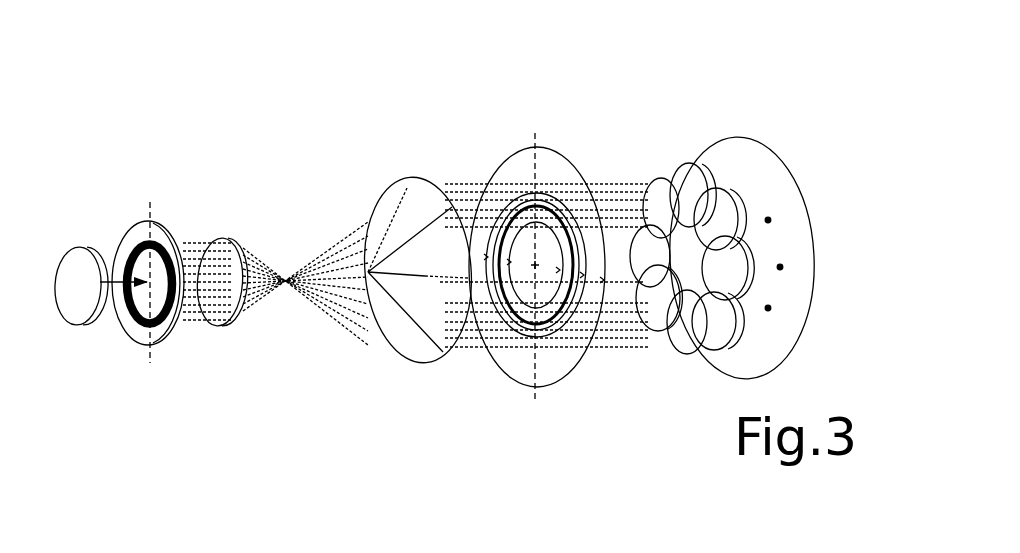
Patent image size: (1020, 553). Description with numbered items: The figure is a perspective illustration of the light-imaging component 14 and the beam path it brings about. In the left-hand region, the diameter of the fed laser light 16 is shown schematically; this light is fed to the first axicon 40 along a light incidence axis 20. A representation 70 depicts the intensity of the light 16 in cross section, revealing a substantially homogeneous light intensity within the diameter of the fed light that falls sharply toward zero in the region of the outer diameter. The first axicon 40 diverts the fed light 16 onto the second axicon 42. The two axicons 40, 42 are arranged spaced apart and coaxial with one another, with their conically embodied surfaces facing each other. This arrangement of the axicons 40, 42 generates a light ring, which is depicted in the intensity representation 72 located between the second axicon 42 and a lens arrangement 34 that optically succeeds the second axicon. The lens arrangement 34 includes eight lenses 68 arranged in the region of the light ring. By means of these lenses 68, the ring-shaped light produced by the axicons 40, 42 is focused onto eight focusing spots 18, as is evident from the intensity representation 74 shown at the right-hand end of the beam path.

The light-imaging component 14 is at (485, 107).
The laser light 16 is at (90, 328).
The focusing spots 18 is at (770, 308).
The light incidence axis 20 is at (113, 262).
The lens arrangement 34 is at (661, 107).
The first axicon 40 is at (222, 237).
The second axicon 42 is at (416, 183).
The lenses 68 is at (708, 312).
The intensity representation of the fed light 70 is at (157, 223).
The intensity representation of the light ring 72 is at (546, 150).
The intensity representation of the focusing spots 74 is at (746, 140).